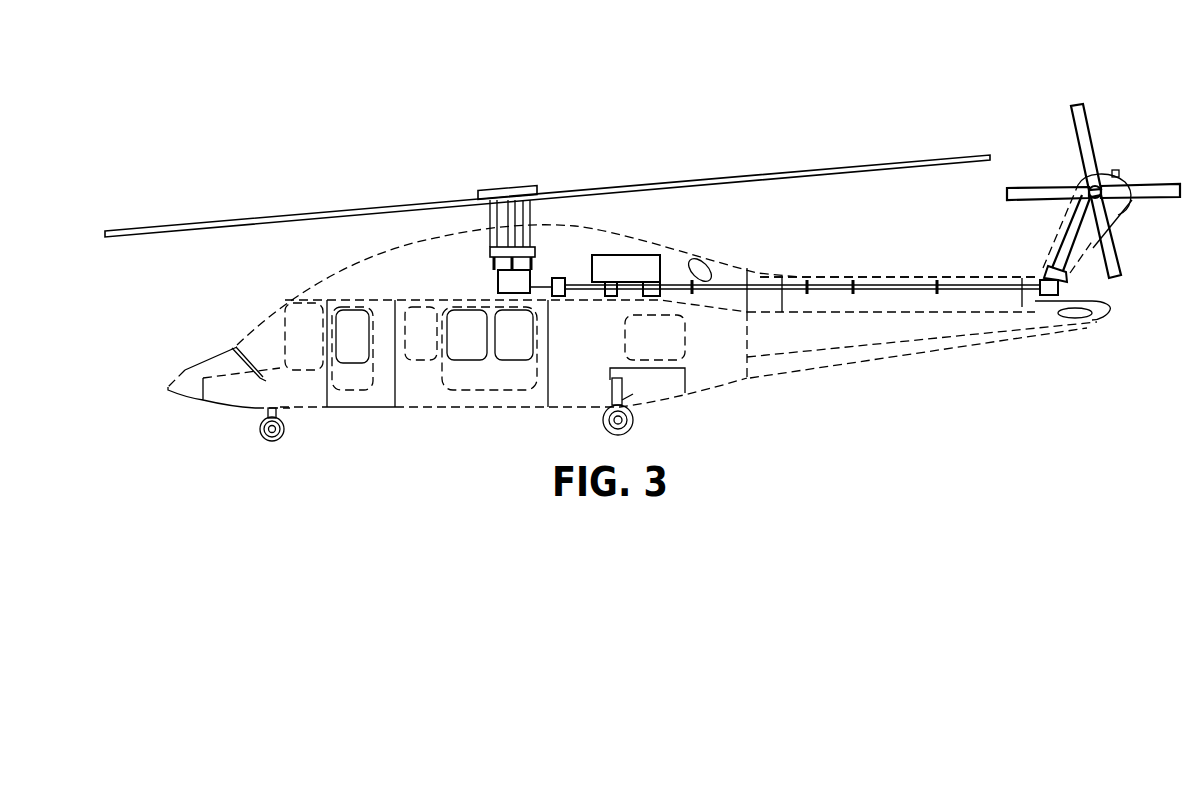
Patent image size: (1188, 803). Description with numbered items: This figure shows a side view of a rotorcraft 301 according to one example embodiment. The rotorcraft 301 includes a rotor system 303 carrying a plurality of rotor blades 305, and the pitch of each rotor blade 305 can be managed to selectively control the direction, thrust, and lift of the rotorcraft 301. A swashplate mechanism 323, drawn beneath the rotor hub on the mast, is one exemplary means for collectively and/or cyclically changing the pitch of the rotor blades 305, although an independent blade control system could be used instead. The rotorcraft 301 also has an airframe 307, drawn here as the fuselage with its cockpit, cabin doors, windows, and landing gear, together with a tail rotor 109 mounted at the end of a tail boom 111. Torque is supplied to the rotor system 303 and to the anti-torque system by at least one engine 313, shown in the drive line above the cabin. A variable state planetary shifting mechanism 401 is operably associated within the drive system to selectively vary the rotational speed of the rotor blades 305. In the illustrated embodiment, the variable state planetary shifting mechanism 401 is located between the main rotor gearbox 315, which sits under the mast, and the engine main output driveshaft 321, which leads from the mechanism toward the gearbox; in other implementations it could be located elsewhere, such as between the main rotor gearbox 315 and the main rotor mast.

The rotorcraft 301 is at (441, 121).
The rotor system 303 is at (518, 178).
The rotor blades 305 is at (290, 216).
The airframe 307 is at (415, 408).
The engine 313 is at (647, 258).
The main rotor gearbox 315 is at (498, 283).
The engine main output driveshaft 321 is at (583, 297).
The swashplate mechanism 323 is at (542, 238).
The variable state planetary shifting mechanism 401 is at (591, 256).
The tail rotor 109 is at (1126, 155).
The tail boom 111 is at (923, 352).